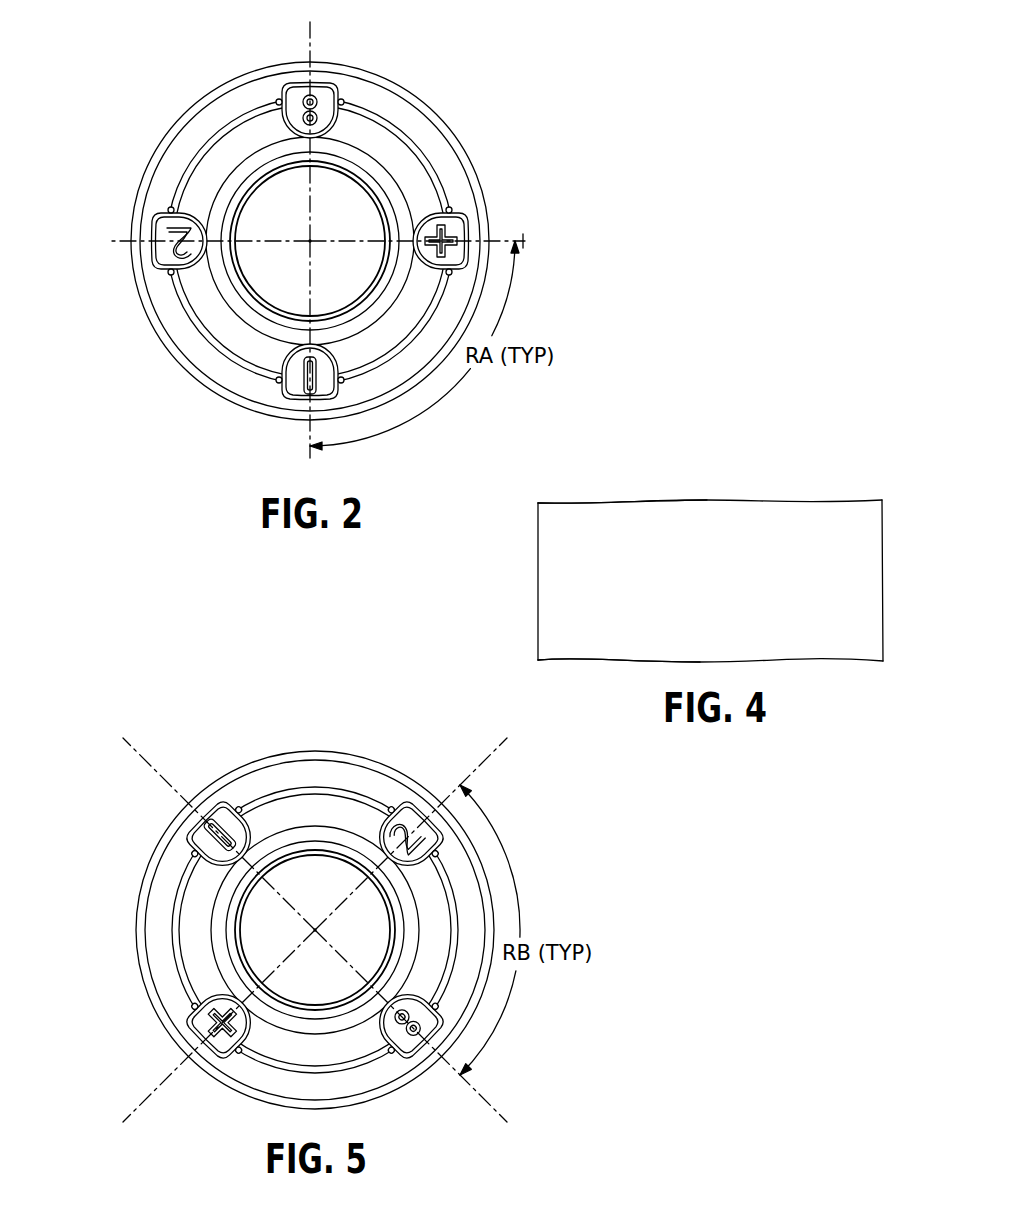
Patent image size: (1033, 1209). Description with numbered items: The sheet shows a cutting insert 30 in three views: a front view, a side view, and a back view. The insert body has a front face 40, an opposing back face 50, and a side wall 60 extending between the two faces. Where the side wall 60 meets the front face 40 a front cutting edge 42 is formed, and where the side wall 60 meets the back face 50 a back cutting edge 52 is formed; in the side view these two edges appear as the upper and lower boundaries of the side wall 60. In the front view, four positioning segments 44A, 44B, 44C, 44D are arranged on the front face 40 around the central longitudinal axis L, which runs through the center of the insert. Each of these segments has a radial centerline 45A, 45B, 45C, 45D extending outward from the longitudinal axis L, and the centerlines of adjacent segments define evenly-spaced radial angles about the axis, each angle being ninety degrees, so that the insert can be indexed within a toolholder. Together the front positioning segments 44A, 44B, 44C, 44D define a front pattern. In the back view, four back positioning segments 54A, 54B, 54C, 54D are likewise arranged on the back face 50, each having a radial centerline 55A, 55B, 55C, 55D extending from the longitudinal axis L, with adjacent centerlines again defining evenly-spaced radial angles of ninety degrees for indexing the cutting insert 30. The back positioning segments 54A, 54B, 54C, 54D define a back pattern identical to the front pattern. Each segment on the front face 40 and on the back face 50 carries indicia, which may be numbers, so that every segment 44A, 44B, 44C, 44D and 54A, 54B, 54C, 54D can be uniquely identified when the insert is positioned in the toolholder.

In FIG. 2, the cutting insert 30 is at (461, 56).
In FIG. 5, the cutting insert 30 is at (533, 822).
In FIG. 2, the front face 40 is at (210, 102).
In FIG. 4, the front face 40 is at (593, 505).
In FIG. 4, the front cutting edge 42 is at (538, 503).
In FIG. 2, the positioning segment 44A is at (293, 383).
In FIG. 2, the positioning segment 44B is at (165, 222).
In FIG. 2, the positioning segment 44C is at (318, 100).
In FIG. 2, the positioning segment 44D is at (457, 222).
In FIG. 2, the radial centerline 45A is at (310, 452).
In FIG. 2, the radial centerline 45B is at (112, 244).
In FIG. 2, the radial centerline 45C is at (307, 32).
In FIG. 2, the radial centerline 45D is at (523, 240).
In FIG. 4, the back face 50 is at (585, 658).
In FIG. 5, the back face 50 is at (158, 866).
In FIG. 4, the back cutting edge 52 is at (538, 660).
In FIG. 5, the back positioning segment 54A is at (213, 813).
In FIG. 5, the back positioning segment 54B is at (408, 803).
In FIG. 5, the back positioning segment 54C is at (400, 1038).
In FIG. 5, the back positioning segment 54D is at (222, 1043).
In FIG. 5, the radial centerline 55A is at (130, 747).
In FIG. 5, the radial centerline 55B is at (477, 768).
In FIG. 5, the radial centerline 55C is at (498, 1112).
In FIG. 5, the radial centerline 55D is at (160, 1090).
In FIG. 4, the side wall 60 is at (538, 567).
In FIG. 2, the longitudinal axis L is at (310, 241).
In FIG. 5, the longitudinal axis L is at (315, 930).